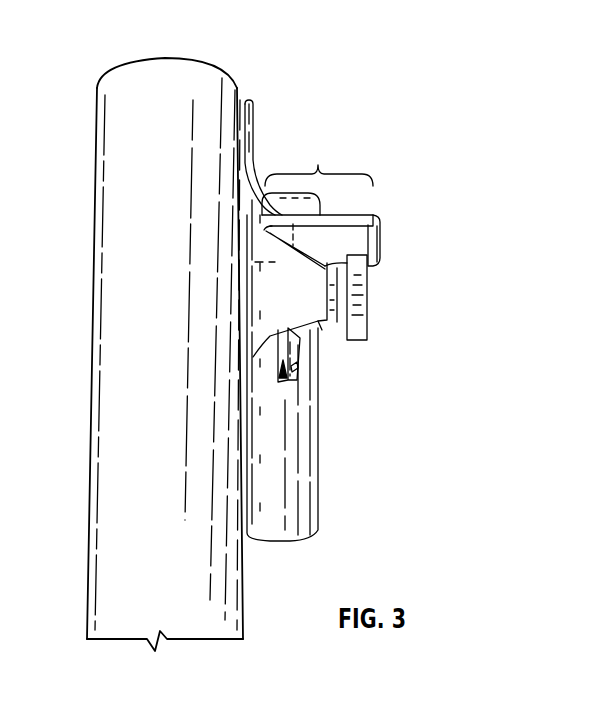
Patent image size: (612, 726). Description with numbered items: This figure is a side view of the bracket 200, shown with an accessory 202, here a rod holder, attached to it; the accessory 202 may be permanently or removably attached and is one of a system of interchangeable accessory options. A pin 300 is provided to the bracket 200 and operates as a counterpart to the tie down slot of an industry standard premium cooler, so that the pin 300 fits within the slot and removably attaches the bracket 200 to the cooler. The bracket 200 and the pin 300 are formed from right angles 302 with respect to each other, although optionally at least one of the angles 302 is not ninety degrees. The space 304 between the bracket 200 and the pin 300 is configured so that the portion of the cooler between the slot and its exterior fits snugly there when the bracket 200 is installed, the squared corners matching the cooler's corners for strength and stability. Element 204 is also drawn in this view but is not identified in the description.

The bracket 200 is at (325, 100).
The accessory 202 is at (224, 89).
The latch 204 is at (285, 384).
The pin 300 is at (354, 310).
The right angles 302 is at (283, 263).
The space 304 is at (321, 203).